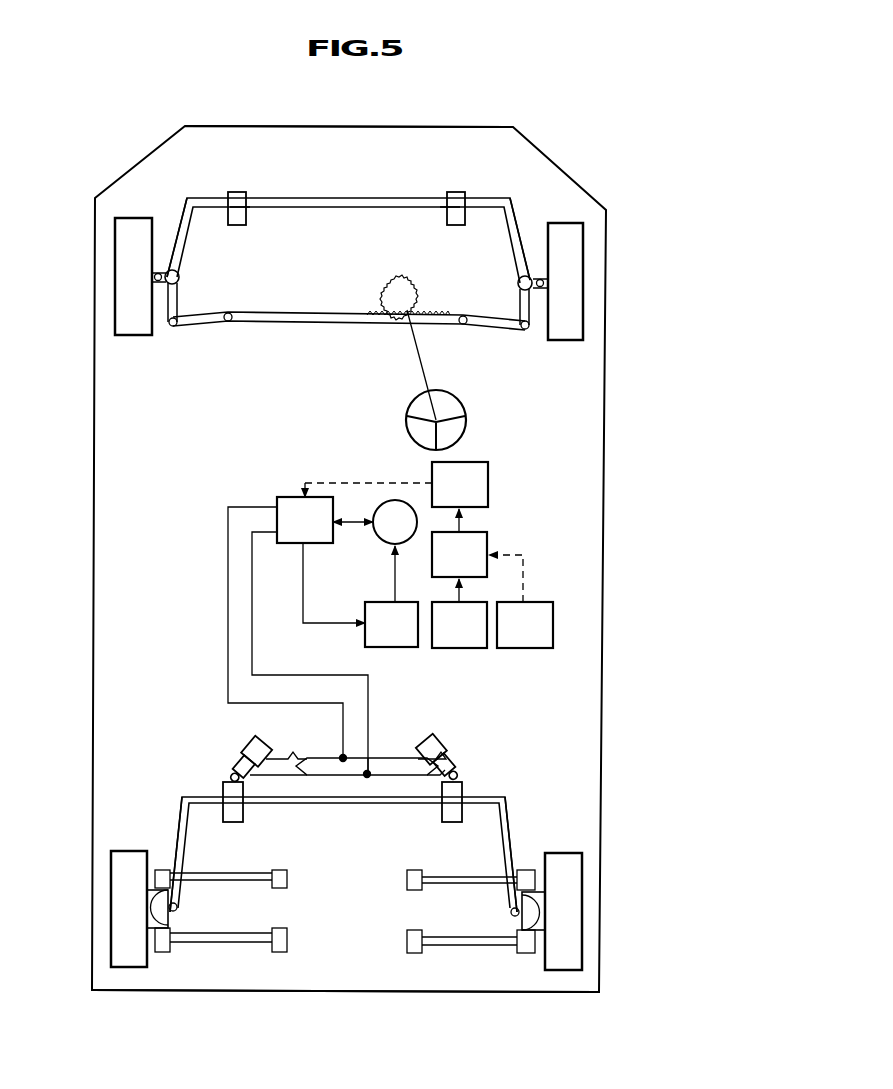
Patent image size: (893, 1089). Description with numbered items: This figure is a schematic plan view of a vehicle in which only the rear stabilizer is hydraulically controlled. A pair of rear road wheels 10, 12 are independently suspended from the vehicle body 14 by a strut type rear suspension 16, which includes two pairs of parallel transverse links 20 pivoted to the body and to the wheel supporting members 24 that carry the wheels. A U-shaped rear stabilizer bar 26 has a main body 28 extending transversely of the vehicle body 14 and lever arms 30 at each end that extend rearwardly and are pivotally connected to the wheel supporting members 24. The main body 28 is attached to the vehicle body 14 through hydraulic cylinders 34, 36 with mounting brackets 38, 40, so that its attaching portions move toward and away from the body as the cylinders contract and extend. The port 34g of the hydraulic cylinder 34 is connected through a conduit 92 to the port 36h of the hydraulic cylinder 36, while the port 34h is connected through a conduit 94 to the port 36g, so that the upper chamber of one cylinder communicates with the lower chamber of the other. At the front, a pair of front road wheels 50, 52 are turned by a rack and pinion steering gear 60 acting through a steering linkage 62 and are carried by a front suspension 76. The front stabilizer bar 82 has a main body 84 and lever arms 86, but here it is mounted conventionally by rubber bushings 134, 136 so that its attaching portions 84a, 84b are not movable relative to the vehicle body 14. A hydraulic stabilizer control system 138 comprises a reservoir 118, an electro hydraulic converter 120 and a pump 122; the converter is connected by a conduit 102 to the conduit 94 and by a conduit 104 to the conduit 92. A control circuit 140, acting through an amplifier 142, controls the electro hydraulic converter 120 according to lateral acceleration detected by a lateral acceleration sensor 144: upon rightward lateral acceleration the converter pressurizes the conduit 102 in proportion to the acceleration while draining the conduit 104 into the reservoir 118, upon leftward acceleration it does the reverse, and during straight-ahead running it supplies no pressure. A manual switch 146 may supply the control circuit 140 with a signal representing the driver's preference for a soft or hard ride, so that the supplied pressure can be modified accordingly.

The rear road wheel 10 is at (125, 851).
The rear road wheel 12 is at (578, 853).
The vehicle body 14 is at (93, 503).
The strut type rear suspension 16 is at (172, 992).
The parallel transverse links 20 is at (258, 882).
The wheel supporting member 24 is at (176, 915).
The stabilizer bar 26 is at (350, 842).
The main body 28 is at (335, 802).
The lever arms 30 is at (180, 810).
The hydraulic cylinder 34 is at (237, 774).
The port 34h is at (256, 751).
The port 34g is at (241, 770).
The hydraulic cylinder 36 is at (438, 771).
The port 36h is at (431, 749).
The port 36g is at (447, 735).
The left mounting bracket 38 is at (232, 822).
The right mounting bracket 40 is at (456, 822).
The front road wheel 50 is at (147, 218).
The front road wheel 52 is at (565, 223).
The rack and pinion steering gear 60 is at (422, 332).
The steering linkage 62 is at (200, 325).
The front suspension 76 is at (218, 160).
The stabilizer bar 82 is at (350, 215).
The main body 84 is at (350, 197).
The attaching portion 84a is at (248, 208).
The attaching portion 84b is at (447, 208).
The lever arms 86 is at (184, 205).
The conduit 92 is at (372, 778).
The conduit 94 is at (326, 757).
The conduit 102 is at (228, 638).
The conduit 104 is at (253, 636).
The reservoir 118 is at (398, 647).
The electro hydraulic converter 120 is at (292, 497).
The pump 122 is at (379, 536).
The rubber bushing 134 is at (240, 192).
The rubber bushing 136 is at (448, 192).
The hydraulic stabilizer control system 138 is at (382, 614).
The control circuit 140 is at (487, 537).
The amplifier 142 is at (488, 478).
The lateral acceleration sensor 144 is at (536, 648).
The manual switch 146 is at (469, 648).